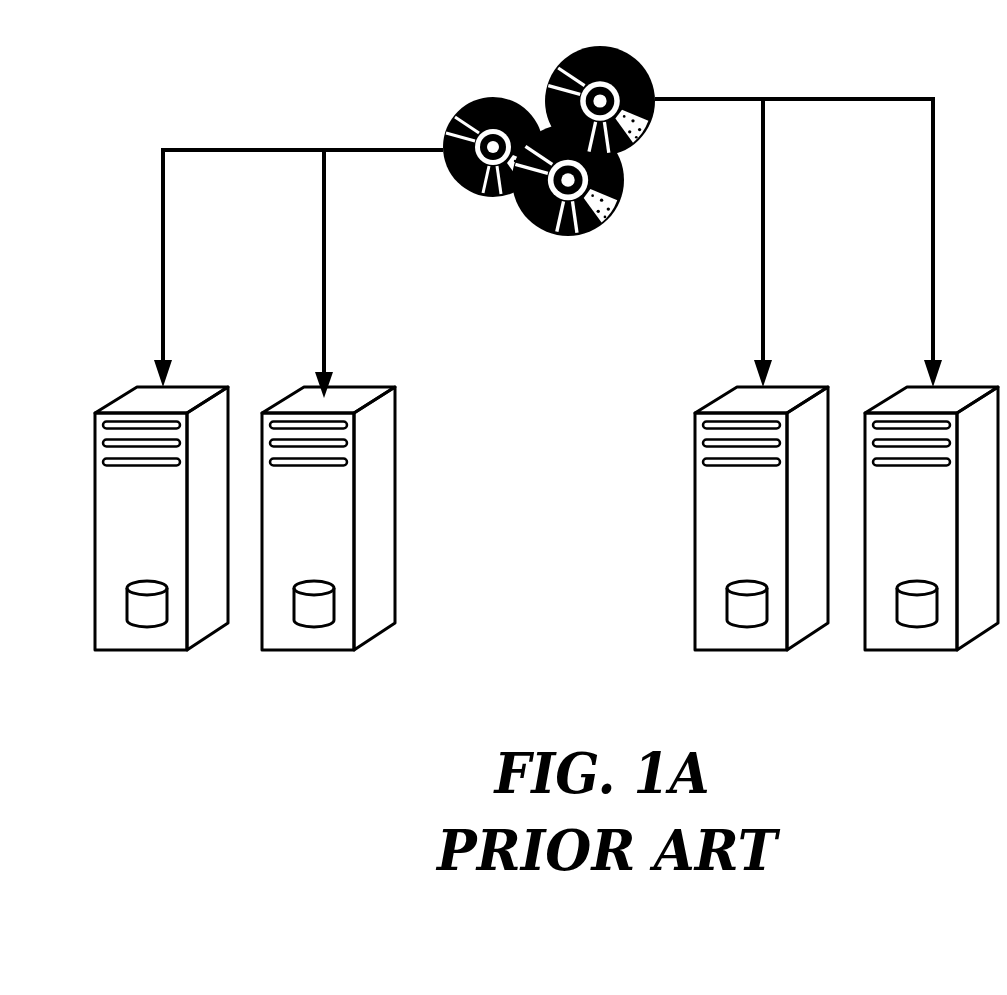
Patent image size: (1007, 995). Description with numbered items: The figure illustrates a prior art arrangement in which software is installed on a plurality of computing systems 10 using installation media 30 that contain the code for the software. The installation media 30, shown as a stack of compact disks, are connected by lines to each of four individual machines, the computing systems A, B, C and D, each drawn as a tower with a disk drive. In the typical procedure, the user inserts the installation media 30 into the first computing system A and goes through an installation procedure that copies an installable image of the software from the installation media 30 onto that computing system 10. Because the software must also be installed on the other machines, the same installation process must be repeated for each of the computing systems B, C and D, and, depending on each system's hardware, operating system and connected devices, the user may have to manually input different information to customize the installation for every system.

The installation media 30 is at (450, 132).
The computing systems 10 is at (546, 548).
The computing system 10A A is at (161, 548).
The computing system 10B B is at (328, 544).
The computing system 10C C is at (761, 544).
The computing system 10D D is at (931, 544).